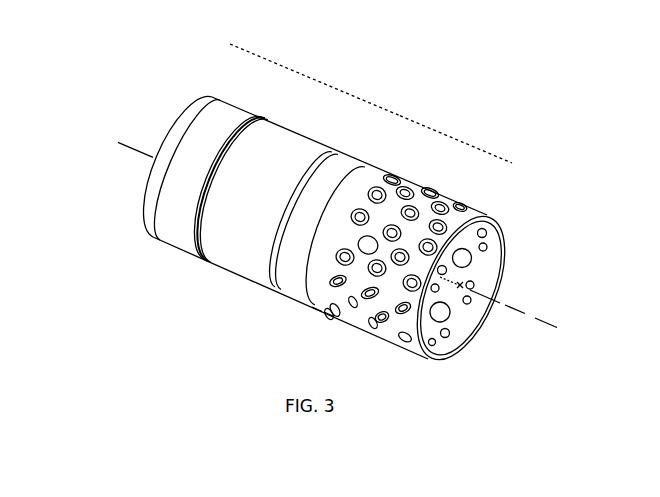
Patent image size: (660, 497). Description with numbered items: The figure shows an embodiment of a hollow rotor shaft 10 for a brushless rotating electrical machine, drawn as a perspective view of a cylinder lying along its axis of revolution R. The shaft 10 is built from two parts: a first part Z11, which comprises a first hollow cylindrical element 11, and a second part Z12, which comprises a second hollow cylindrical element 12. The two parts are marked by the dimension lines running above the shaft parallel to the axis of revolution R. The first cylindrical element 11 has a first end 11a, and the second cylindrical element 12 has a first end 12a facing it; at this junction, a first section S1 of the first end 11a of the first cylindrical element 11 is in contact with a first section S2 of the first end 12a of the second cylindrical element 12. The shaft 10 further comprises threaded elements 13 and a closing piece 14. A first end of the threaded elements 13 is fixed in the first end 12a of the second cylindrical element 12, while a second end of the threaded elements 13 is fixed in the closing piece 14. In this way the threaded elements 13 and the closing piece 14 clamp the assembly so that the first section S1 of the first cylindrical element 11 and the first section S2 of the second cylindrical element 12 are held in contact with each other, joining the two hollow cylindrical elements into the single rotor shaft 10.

The shaft 10 is at (520, 220).
The first hollow cylindrical element 11 is at (178, 243).
The first end of the first cylindrical element 11a is at (367, 158).
The second hollow cylindrical element 12 is at (353, 318).
The first end of the second cylindrical element 12a is at (384, 174).
The threaded elements 13 is at (451, 292).
The closing piece 14 is at (380, 325).
The axis of revolution R is at (545, 320).
The first part Z11 is at (315, 80).
The second part Z12 is at (456, 139).
The first section of the first end of the first cylindrical element S1 is at (317, 311).
The first section of the first end of the second cylindrical element S2 is at (328, 316).